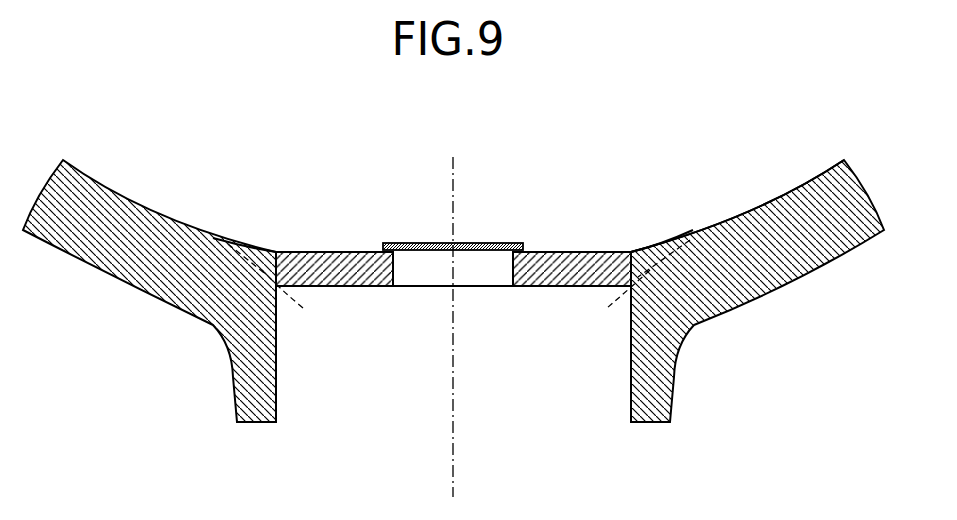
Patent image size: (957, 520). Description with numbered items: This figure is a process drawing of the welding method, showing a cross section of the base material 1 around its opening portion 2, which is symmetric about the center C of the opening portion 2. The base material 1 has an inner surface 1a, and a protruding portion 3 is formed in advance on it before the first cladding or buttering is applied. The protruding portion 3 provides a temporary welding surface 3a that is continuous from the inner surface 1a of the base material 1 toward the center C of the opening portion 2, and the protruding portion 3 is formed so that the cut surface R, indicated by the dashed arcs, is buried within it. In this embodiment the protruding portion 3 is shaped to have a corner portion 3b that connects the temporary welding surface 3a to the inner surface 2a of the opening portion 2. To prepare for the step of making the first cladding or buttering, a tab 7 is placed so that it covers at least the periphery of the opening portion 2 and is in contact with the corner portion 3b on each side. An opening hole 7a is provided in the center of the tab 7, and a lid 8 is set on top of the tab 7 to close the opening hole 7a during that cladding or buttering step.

The base material 1 is at (773, 272).
The inner surface of the base material 1a is at (760, 202).
The opening portion 2 is at (628, 402).
The inner surface of the opening portion 2a is at (277, 400).
The protruding portion 3 is at (256, 260).
The temporary welding surface 3a is at (244, 242).
The corner portion 3b is at (275, 250).
The tab 7 is at (358, 263).
The opening hole 7a is at (520, 268).
The lid 8 is at (490, 244).
The center of the opening portion C is at (453, 315).
The cut surface R is at (305, 310).